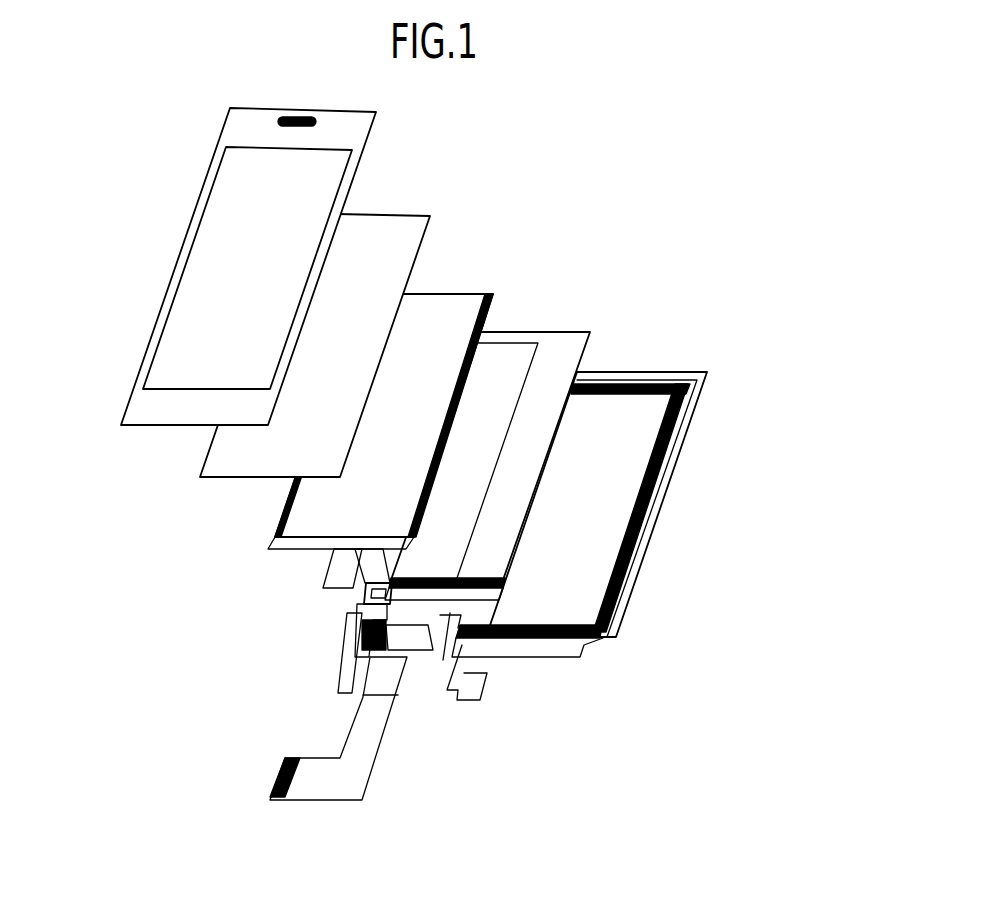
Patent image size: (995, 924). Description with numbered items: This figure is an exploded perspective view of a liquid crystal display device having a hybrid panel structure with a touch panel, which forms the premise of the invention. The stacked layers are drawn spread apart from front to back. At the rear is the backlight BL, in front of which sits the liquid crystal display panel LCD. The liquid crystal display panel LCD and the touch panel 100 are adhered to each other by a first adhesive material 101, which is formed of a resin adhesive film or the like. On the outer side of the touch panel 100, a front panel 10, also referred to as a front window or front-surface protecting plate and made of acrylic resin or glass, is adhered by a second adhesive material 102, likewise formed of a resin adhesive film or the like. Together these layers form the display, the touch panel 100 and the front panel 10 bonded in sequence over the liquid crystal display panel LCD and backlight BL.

The front panel 10 is at (211, 266).
The second adhesive material 102 is at (236, 371).
The touch panel 100 is at (266, 474).
The first adhesive material 101 is at (254, 634).
The liquid crystal display panel LCD is at (522, 561).
The backlight BL is at (641, 536).